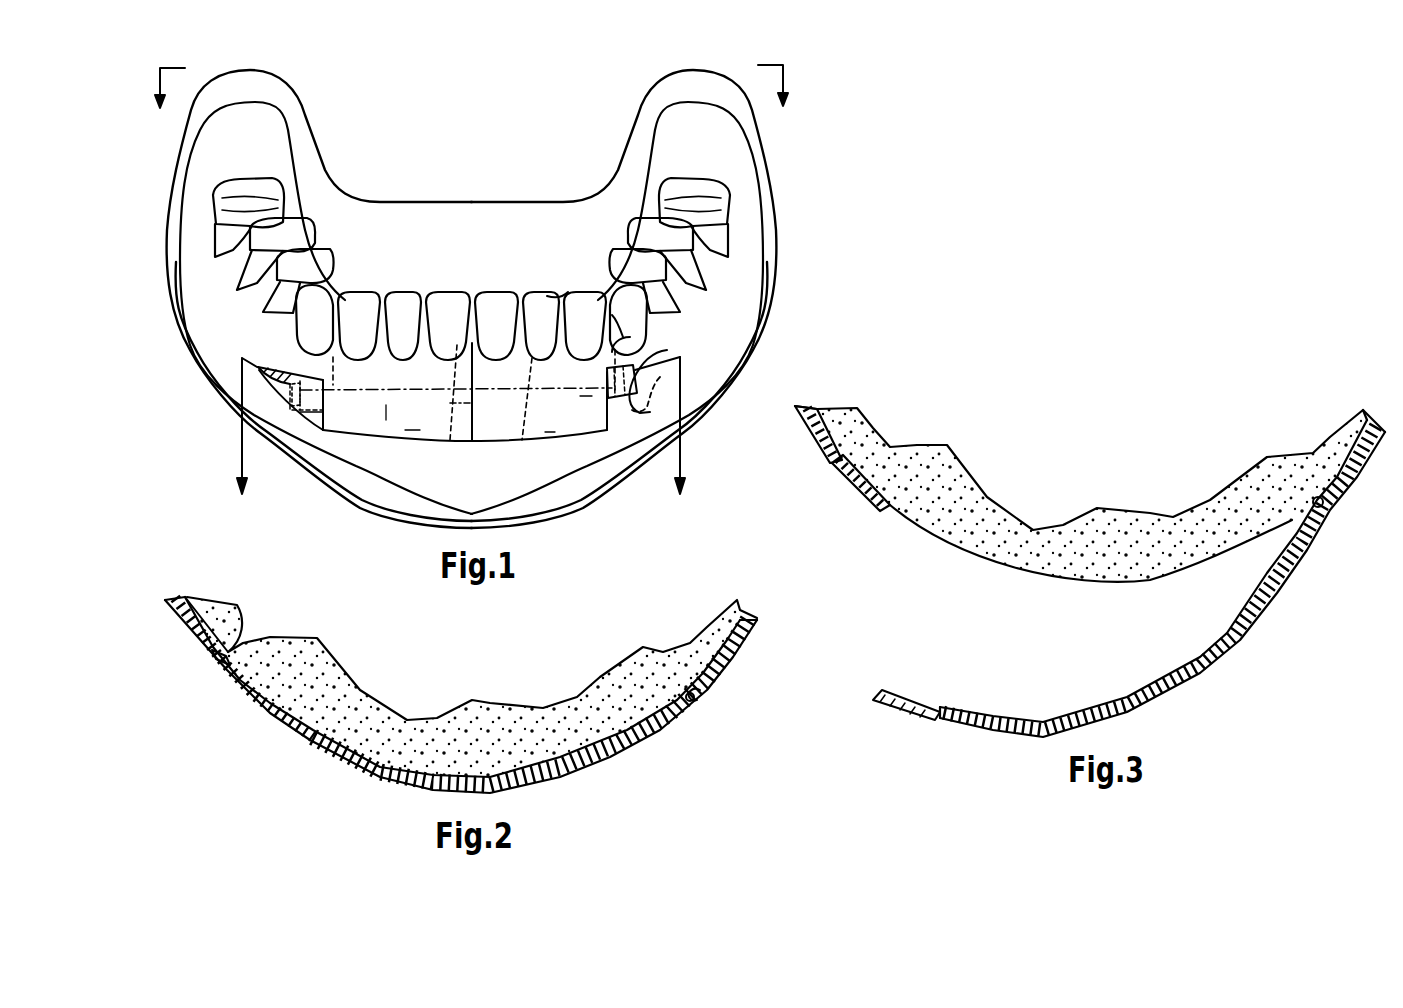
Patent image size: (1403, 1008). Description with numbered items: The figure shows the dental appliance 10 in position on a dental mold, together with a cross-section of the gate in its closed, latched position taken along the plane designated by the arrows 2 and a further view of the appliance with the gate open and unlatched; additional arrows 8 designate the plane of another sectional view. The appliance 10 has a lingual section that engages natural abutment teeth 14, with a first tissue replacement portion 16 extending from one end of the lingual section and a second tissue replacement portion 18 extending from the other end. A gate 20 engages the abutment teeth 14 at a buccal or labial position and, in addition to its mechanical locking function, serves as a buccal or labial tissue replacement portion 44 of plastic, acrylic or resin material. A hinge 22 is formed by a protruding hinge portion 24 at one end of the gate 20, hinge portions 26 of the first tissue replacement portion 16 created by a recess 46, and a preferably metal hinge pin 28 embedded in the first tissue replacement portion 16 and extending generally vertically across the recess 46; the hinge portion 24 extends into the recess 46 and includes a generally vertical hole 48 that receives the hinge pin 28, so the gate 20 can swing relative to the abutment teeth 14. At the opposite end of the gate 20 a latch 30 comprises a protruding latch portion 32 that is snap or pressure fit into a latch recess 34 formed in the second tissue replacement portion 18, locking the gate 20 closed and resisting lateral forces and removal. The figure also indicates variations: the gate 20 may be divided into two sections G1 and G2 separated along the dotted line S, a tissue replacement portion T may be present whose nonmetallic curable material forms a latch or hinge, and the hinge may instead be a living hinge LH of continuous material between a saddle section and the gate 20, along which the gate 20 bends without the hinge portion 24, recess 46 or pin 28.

In FIG. 1, the section plane arrows 2 is at (462, 439).
In FIG. 1, the section plane arrows 8 is at (470, 101).
In FIG. 1, the dental appliance 10 is at (600, 162).
In FIG. 1, the natural abutment tooth 14 is at (402, 310).
In FIG. 1, the first tissue replacement portion 16 is at (745, 243).
In FIG. 1, the second tissue replacement portion 18 is at (260, 160).
In FIG. 1, the gate 20 is at (553, 410).
In FIG. 2, the gate 20 is at (461, 695).
In FIG. 3, the gate 20 is at (1133, 690).
In FIG. 1, the hinge 22 is at (618, 447).
In FIG. 1, the hinge portion 24 is at (610, 384).
In FIG. 1, the hinge portions of the first tissue replacement portion 26 is at (630, 337).
In FIG. 1, the hinge pin 28 is at (660, 377).
In FIG. 2, the hinge pin 28 is at (697, 698).
In FIG. 1, the latch 30 is at (307, 445).
In FIG. 1, the latch portion 32 is at (298, 400).
In FIG. 2, the latch portion 32 is at (225, 665).
In FIG. 3, the latch portion 32 is at (897, 692).
In FIG. 1, the latch recess 34 is at (270, 398).
In FIG. 2, the latch recess 34 is at (228, 652).
In FIG. 1, the buccal or labial tissue replacement portion 44 is at (413, 428).
In FIG. 1, the recess 46 is at (667, 350).
In FIG. 2, the hole 48 is at (688, 703).
In FIG. 3, the hole 48 is at (1318, 502).
In FIG. 1, the tissue replacement portion T is at (547, 295).
In FIG. 1, the dotted line S is at (448, 403).
In FIG. 1, the first gate section G1 is at (388, 405).
In FIG. 1, the second gate section G2 is at (545, 433).
In FIG. 1, the living hinge LH is at (583, 397).